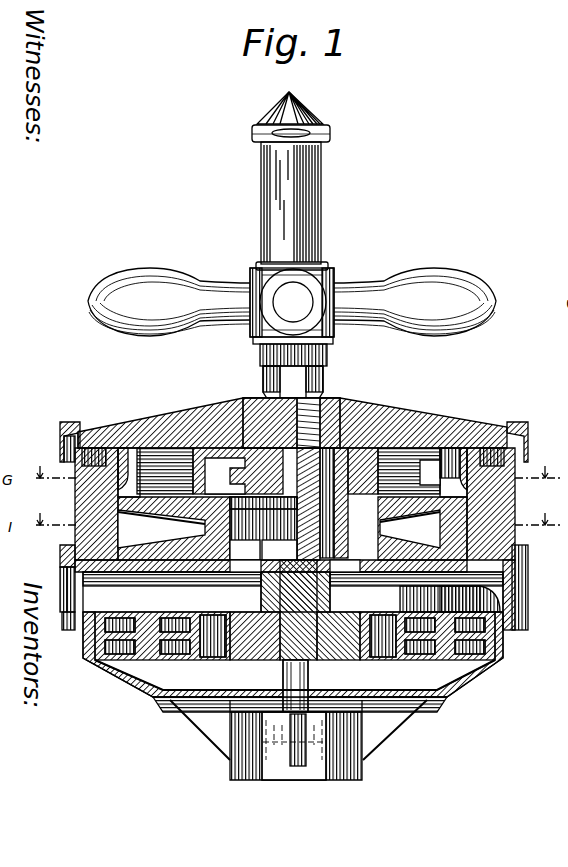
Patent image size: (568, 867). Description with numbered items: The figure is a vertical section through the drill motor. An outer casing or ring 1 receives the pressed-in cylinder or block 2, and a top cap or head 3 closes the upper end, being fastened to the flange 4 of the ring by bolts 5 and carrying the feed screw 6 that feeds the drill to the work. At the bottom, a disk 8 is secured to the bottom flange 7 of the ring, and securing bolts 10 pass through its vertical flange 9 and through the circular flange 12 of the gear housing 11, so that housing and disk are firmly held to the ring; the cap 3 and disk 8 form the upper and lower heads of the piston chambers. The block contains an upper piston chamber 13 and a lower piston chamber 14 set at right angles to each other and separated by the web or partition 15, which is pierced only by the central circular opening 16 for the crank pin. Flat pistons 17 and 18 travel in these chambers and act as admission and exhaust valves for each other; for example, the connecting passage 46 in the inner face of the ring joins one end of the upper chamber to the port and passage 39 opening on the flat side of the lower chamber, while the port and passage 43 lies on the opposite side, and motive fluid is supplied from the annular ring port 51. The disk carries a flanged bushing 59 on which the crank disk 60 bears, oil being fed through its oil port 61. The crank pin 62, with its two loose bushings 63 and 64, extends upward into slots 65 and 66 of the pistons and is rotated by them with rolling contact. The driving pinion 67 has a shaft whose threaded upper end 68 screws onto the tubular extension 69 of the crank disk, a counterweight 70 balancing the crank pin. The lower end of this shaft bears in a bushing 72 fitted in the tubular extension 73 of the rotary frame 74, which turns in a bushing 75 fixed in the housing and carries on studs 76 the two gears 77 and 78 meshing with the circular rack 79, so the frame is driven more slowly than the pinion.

The outer casing or ring 1 is at (80, 510).
The cylinder or block 2 is at (60, 556).
The top cap or head 3 is at (138, 432).
The flange 4 is at (64, 455).
The bolts 5 is at (72, 424).
The feed screw 6 is at (262, 250).
The bottom flange 7 is at (60, 575).
The disk 8 is at (70, 590).
The vertical flange 9 is at (512, 598).
The securing bolts 10 is at (83, 640).
The casing or gear housing 11 is at (160, 685).
The circular flange 12 is at (62, 620).
The upper piston chamber 13 is at (183, 455).
The lower piston chamber 14 is at (528, 551).
The web portion or partition 15 is at (238, 471).
The central circular opening 16 is at (263, 528).
The upper piston 17 is at (452, 450).
The lower piston 18 is at (470, 510).
The port and passage 39 is at (174, 528).
The port and passage 43 is at (422, 528).
The connecting passage 46 is at (110, 486).
The ring port 51 is at (96, 450).
The flanged bushing 59 is at (416, 592).
The crank disk 60 is at (279, 550).
The oil port 61 is at (245, 550).
The crank pin 62 is at (335, 440).
The bushing or collar 63 is at (409, 471).
The bushing or collar 64 is at (323, 504).
The slot 65 is at (360, 445).
The slot 66 is at (165, 471).
The driving pinion 67 is at (380, 712).
The upper end of pinion shaft 68 is at (440, 599).
The tubular extension or shaft 69 is at (470, 596).
The counterweight or balance 70 is at (172, 592).
The bushing 72 is at (240, 718).
The tubular extension 73 is at (226, 712).
The rotary frame 74 is at (218, 700).
The bushing 75 is at (365, 745).
The studs 76 is at (130, 675).
The gear 77 is at (110, 670).
The gear 78 is at (460, 688).
The circular rack 79 is at (503, 638).